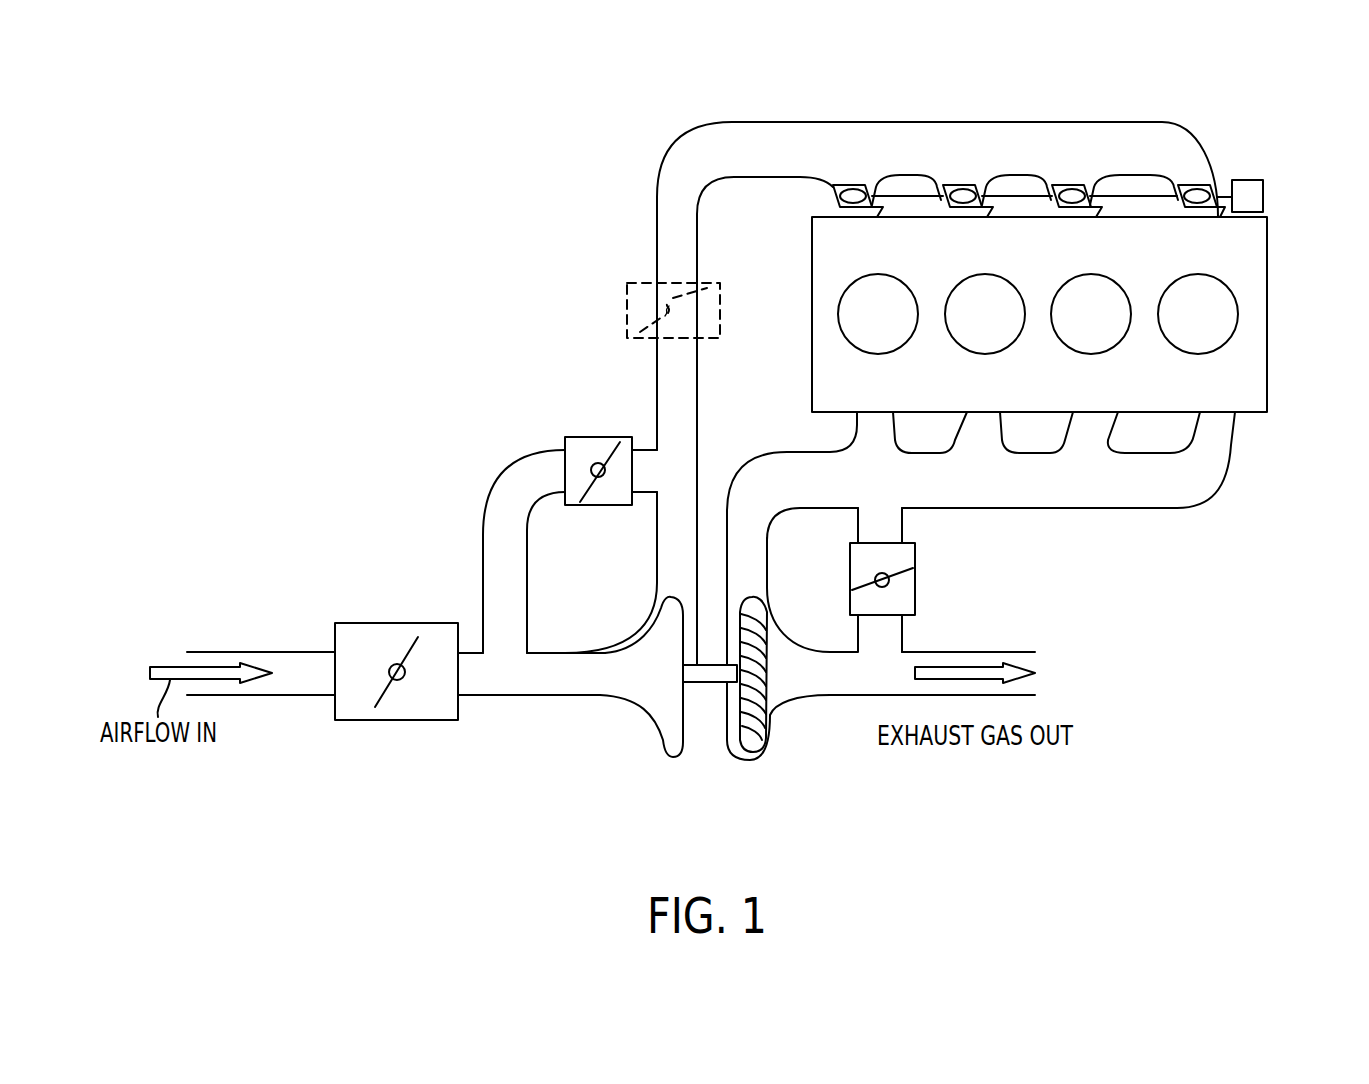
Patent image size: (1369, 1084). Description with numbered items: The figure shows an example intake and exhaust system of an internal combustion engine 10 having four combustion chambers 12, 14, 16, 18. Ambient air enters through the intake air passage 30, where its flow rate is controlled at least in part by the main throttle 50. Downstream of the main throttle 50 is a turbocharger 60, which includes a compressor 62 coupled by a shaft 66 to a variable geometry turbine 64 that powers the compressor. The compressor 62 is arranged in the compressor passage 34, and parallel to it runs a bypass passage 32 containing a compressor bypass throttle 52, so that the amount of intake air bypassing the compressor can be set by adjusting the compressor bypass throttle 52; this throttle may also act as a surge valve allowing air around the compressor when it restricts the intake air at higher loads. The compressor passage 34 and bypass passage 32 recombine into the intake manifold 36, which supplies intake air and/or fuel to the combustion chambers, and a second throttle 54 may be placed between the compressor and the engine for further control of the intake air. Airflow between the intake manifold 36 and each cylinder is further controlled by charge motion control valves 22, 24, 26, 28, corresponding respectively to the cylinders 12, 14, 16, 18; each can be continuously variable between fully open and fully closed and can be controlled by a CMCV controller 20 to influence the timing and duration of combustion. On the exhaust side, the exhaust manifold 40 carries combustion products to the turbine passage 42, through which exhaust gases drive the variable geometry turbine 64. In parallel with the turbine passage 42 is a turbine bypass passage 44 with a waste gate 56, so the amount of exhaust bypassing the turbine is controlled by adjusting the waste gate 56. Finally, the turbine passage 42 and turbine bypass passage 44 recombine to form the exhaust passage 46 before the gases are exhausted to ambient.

The internal combustion engine 10 is at (1257, 320).
The combustion chamber 12 is at (866, 331).
The combustion chamber 14 is at (973, 331).
The combustion chamber 16 is at (1079, 331).
The combustion chamber 18 is at (1186, 331).
The CMCV controller 20 is at (1250, 192).
The charge motion control valve 22 is at (853, 193).
The charge motion control valve 24 is at (962, 193).
The charge motion control valve 26 is at (1071, 193).
The charge motion control valve 28 is at (1197, 193).
The intake air passage 30 is at (275, 658).
The bypass passage 32 is at (500, 552).
The compressor passage 34 is at (560, 663).
The intake manifold 36 is at (988, 163).
The exhaust manifold 40 is at (983, 495).
The turbine passage 42 is at (753, 547).
The turbine bypass passage 44 is at (893, 520).
The exhaust passage 46 is at (965, 696).
The main throttle 50 is at (368, 637).
The compressor bypass throttle 52 is at (583, 445).
The second throttle 54 is at (627, 297).
The waste gate 56 is at (905, 557).
The turbocharger 60 is at (697, 686).
The compressor 62 is at (660, 757).
The variable geometry turbine 64 is at (762, 757).
The shaft 66 is at (710, 674).